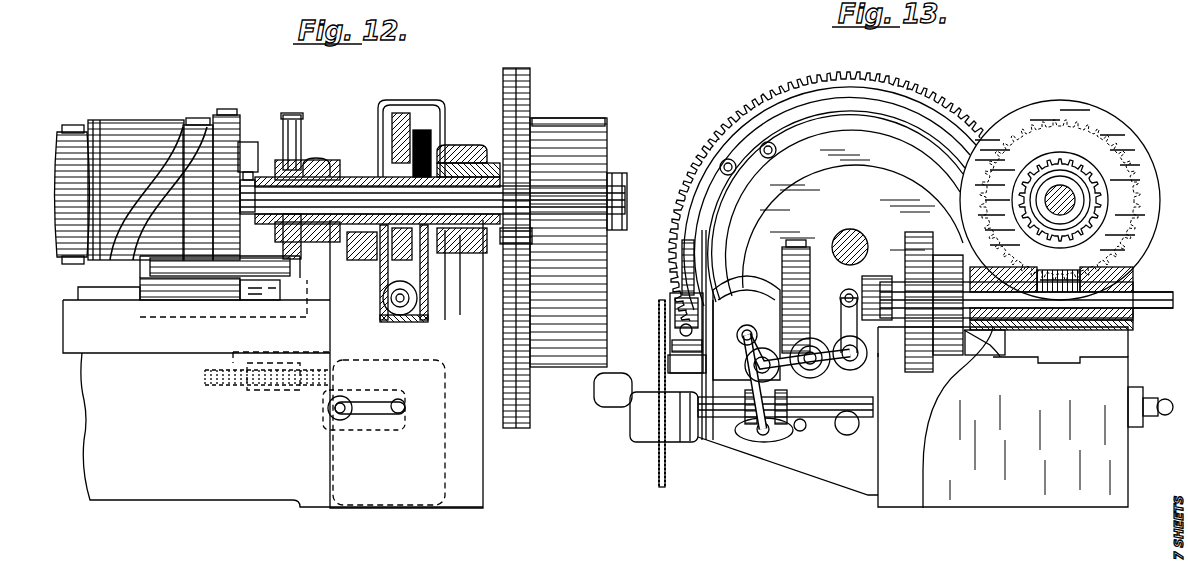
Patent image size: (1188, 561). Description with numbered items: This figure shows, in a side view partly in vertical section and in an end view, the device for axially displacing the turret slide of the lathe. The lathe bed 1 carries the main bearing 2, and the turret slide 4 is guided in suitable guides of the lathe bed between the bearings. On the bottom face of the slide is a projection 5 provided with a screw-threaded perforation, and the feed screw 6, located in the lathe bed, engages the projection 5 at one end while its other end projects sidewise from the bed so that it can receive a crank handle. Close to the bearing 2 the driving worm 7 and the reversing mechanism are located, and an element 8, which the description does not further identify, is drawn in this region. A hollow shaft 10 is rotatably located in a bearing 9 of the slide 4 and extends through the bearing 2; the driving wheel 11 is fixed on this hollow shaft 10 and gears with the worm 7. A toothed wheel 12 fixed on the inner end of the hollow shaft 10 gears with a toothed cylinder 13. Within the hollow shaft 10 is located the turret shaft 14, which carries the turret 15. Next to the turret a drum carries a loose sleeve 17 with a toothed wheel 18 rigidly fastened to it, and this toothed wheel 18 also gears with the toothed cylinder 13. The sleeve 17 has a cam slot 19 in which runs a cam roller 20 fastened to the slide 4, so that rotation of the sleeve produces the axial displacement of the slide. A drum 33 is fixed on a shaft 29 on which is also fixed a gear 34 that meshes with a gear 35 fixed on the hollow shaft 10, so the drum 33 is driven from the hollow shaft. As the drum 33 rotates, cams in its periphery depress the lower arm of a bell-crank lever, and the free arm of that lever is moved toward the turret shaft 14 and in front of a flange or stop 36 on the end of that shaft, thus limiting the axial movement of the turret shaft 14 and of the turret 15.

In FIG. 12, the lathe bed 1 is at (136, 492).
In FIG. 13, the lathe bed 1 is at (1050, 448).
In FIG. 12, the main bearing 2 is at (460, 148).
In FIG. 12, the turret slide 4 is at (196, 320).
In FIG. 13, the turret slide 4 is at (1130, 350).
In FIG. 12, the projection 5 is at (288, 392).
In FIG. 12, the feed screw 6 is at (231, 387).
In FIG. 12, the driving worm 7 is at (374, 310).
In FIG. 13, the driving worm 7 is at (1052, 324).
In FIG. 13, the gear 8 is at (885, 276).
In FIG. 12, the bearing 9 is at (318, 164).
In FIG. 12, the hollow shaft 10 is at (345, 183).
In FIG. 13, the hollow shaft 10 is at (1078, 186).
In FIG. 12, the driving wheel 11 is at (402, 114).
In FIG. 13, the driving wheel 11 is at (1135, 283).
In FIG. 12, the toothed wheel 12 is at (294, 128).
In FIG. 12, the toothed cylinder 13 is at (180, 290).
In FIG. 12, the turret shaft 14 is at (258, 186).
In FIG. 13, the turret shaft 14 is at (1070, 202).
In FIG. 12, the turret 15 is at (72, 132).
In FIG. 12, the loose sleeve 17 is at (116, 136).
In FIG. 12, the toothed wheel 18 is at (230, 120).
In FIG. 12, the cam slot 19 is at (195, 130).
In FIG. 12, the cam roller 20 is at (140, 300).
In FIG. 13, the shaft 29 is at (855, 236).
In FIG. 12, the drum 33 is at (582, 126).
In FIG. 12, the gear 34 is at (528, 96).
In FIG. 13, the gear 34 is at (962, 112).
In FIG. 12, the gear 35 is at (525, 236).
In FIG. 13, the gear 35 is at (1066, 158).
In FIG. 12, the flange or stop 36 is at (628, 182).